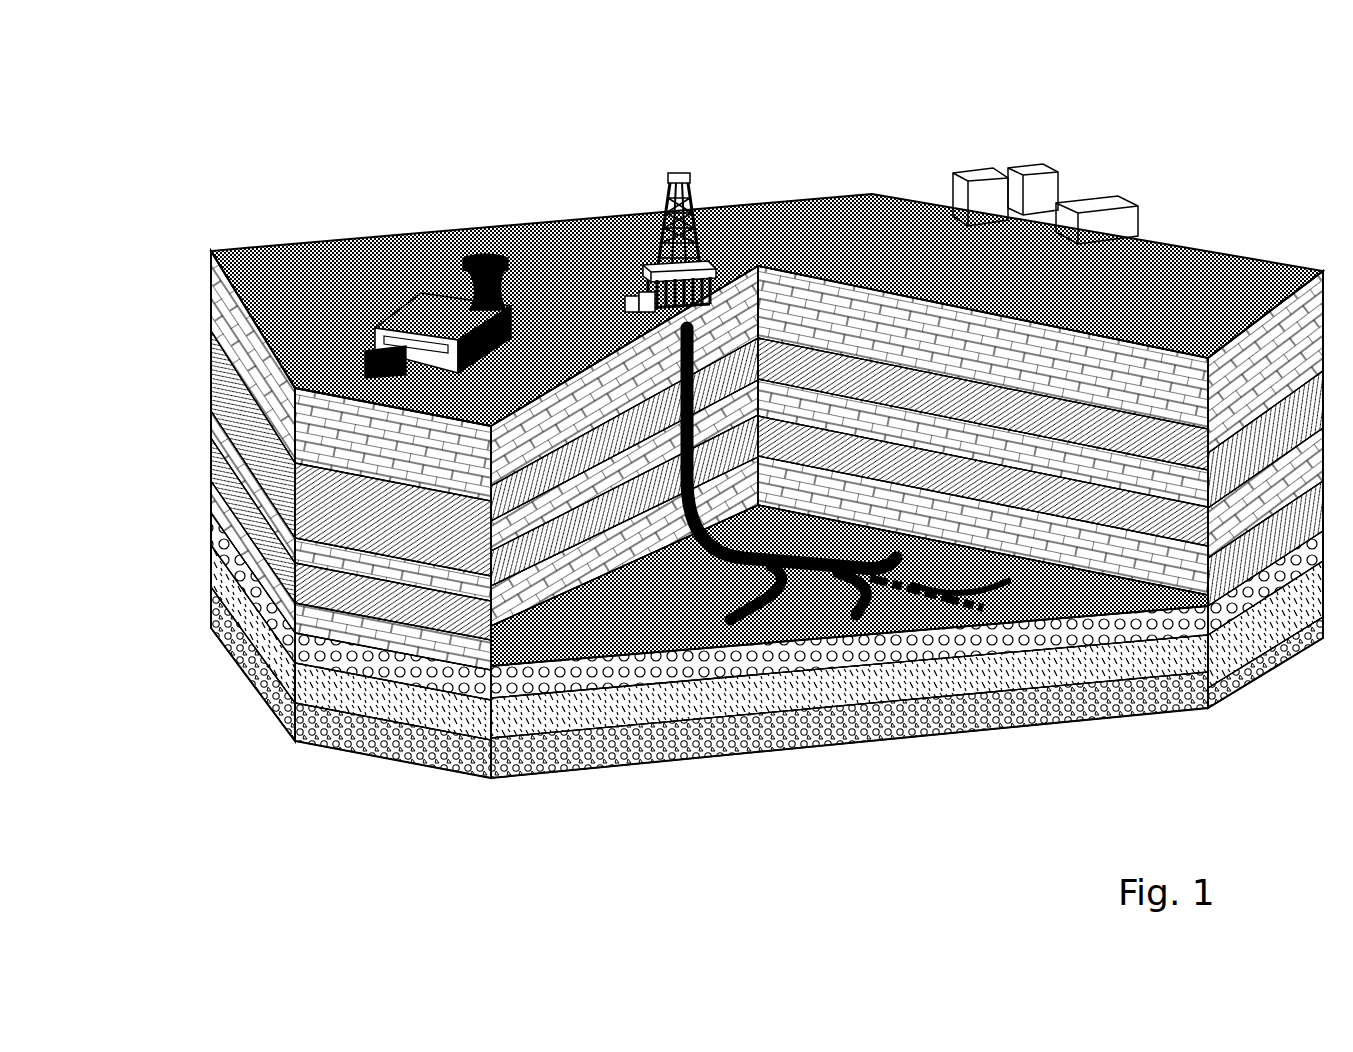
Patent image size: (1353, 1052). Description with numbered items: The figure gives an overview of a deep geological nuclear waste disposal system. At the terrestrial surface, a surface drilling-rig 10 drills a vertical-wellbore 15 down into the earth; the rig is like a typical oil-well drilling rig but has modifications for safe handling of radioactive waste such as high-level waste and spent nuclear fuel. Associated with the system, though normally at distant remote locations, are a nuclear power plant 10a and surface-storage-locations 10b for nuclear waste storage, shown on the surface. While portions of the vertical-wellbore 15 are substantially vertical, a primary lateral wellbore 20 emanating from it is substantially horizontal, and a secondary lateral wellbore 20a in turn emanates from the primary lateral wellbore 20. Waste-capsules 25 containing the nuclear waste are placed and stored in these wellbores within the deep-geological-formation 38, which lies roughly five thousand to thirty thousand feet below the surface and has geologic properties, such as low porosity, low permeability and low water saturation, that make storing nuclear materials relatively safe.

The surface drilling-rig 10 is at (682, 202).
The nuclear power plant 10a is at (430, 288).
The surface-storage-locations 10b is at (1062, 182).
The vertical-wellbore 15 is at (665, 432).
The primary lateral wellbore 20 is at (712, 551).
The secondary lateral wellbore 20a is at (753, 612).
The waste-capsule 25 is at (903, 588).
The deep-geological-formation 38 is at (1010, 630).